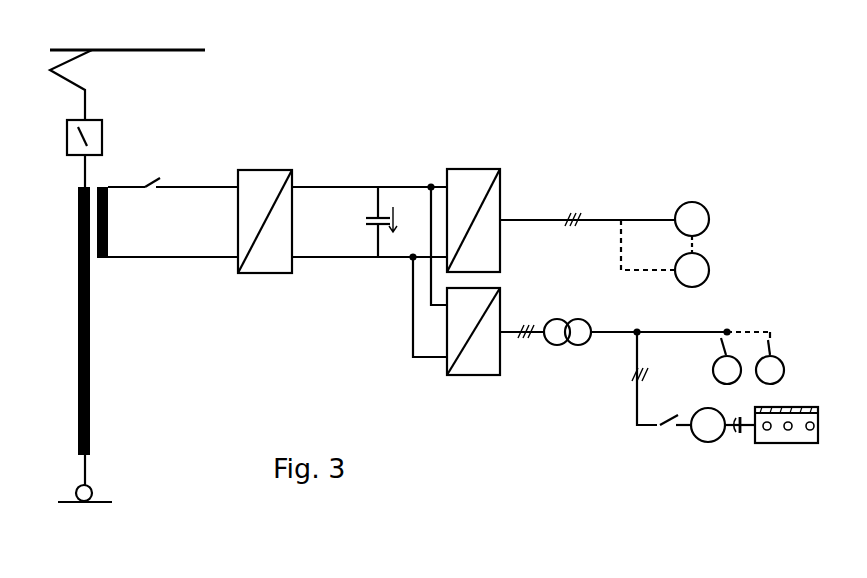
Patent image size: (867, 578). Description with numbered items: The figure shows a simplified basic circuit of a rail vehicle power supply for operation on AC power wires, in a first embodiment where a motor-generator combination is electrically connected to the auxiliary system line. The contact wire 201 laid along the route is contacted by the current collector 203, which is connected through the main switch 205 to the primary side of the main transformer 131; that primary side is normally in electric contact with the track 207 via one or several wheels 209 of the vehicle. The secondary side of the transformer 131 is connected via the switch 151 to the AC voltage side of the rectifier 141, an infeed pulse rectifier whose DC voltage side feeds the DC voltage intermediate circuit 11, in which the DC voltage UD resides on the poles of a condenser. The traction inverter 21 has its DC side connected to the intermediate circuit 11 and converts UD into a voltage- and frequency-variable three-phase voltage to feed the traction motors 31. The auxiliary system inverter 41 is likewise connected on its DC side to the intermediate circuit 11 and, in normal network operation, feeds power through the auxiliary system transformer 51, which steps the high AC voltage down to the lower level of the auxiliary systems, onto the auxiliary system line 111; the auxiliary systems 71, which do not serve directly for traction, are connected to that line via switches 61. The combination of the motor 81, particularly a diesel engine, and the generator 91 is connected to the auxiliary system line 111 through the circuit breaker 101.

The contact wire 201 is at (135, 50).
The current collector 203 is at (88, 64).
The main switch 205 is at (103, 136).
The main transformer 131 is at (66, 336).
The switch 151 is at (156, 199).
The rectifier 141 is at (265, 210).
The DC voltage intermediate circuit 11 is at (369, 260).
The traction inverter 21 is at (473, 210).
The traction motor 31 is at (604, 232).
The auxiliary system inverter 41 is at (473, 343).
The auxiliary system transformer 51 is at (545, 322).
The auxiliary system line 111 is at (680, 323).
The switches 61 is at (761, 359).
The auxiliary systems 71 is at (784, 362).
The circuit breaker 101 is at (661, 378).
The generator 91 is at (723, 437).
The motor 81 is at (786, 436).
The wheels 209 is at (93, 487).
The track 207 is at (100, 505).